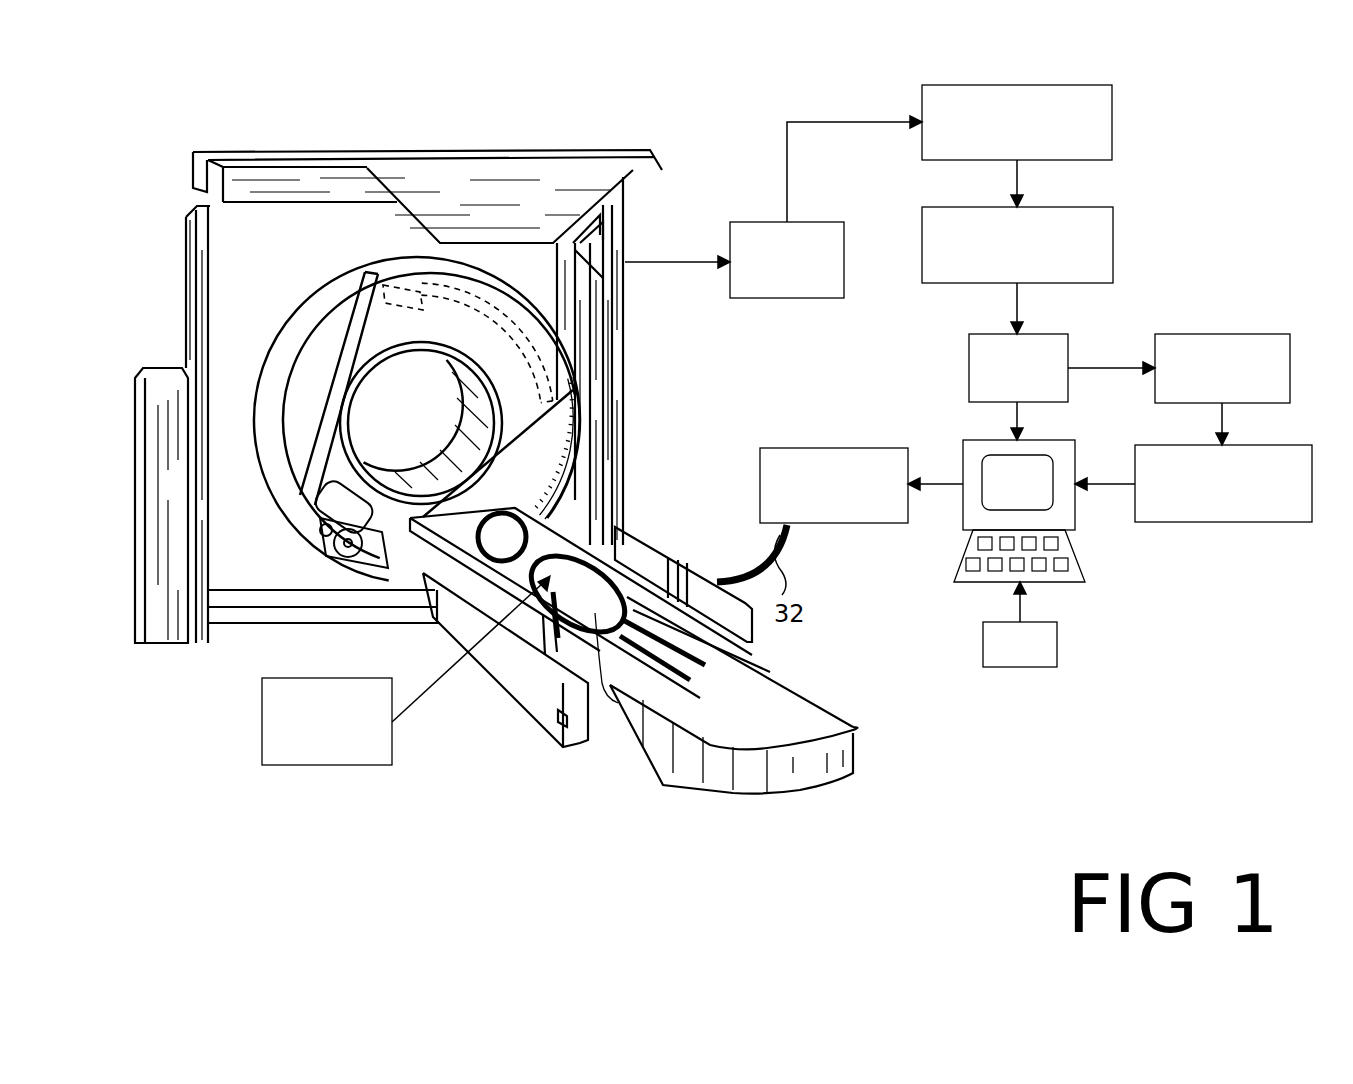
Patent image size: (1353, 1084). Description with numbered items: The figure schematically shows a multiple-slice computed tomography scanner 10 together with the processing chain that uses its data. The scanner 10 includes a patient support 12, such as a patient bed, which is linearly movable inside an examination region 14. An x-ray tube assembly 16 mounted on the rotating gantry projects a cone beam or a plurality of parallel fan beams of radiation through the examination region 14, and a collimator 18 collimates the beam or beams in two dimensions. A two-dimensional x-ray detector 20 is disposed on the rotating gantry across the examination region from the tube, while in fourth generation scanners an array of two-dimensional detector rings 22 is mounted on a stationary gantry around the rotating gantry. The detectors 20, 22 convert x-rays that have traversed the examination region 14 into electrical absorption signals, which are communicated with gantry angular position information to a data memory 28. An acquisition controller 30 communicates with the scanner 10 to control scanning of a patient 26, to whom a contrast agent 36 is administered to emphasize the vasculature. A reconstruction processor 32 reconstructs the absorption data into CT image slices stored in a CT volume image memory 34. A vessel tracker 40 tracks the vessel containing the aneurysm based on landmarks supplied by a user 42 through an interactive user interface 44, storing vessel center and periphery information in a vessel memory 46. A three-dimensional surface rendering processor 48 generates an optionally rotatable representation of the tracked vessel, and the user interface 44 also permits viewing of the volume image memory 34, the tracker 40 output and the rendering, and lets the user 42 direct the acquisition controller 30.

The CT scanner 10 is at (643, 146).
The patient support 12 is at (800, 710).
The examination region 14 is at (392, 408).
The x-ray tube assembly 16 is at (335, 547).
The collimator 18 is at (320, 495).
The two-dimensional x-ray detector 20 is at (418, 295).
The two-dimensional detector rings 22 is at (577, 444).
The patient 26 is at (612, 712).
The data memory 28 is at (844, 268).
The acquisition controller 30 is at (873, 523).
The reconstruction processor 32 is at (1112, 120).
The CT volume image memory 34 is at (1113, 245).
The contrast agent 36 is at (342, 767).
The vessel tracker 40 is at (1068, 350).
The user 42 is at (1057, 650).
The user interface 44 is at (1078, 515).
The vessel memory 46 is at (1200, 334).
The three-dimensional surface rendering processor 48 is at (1185, 522).